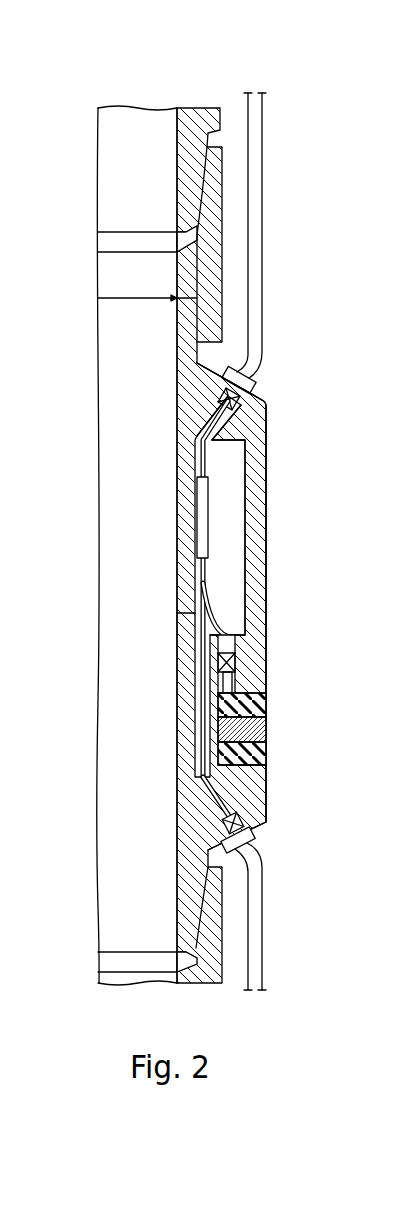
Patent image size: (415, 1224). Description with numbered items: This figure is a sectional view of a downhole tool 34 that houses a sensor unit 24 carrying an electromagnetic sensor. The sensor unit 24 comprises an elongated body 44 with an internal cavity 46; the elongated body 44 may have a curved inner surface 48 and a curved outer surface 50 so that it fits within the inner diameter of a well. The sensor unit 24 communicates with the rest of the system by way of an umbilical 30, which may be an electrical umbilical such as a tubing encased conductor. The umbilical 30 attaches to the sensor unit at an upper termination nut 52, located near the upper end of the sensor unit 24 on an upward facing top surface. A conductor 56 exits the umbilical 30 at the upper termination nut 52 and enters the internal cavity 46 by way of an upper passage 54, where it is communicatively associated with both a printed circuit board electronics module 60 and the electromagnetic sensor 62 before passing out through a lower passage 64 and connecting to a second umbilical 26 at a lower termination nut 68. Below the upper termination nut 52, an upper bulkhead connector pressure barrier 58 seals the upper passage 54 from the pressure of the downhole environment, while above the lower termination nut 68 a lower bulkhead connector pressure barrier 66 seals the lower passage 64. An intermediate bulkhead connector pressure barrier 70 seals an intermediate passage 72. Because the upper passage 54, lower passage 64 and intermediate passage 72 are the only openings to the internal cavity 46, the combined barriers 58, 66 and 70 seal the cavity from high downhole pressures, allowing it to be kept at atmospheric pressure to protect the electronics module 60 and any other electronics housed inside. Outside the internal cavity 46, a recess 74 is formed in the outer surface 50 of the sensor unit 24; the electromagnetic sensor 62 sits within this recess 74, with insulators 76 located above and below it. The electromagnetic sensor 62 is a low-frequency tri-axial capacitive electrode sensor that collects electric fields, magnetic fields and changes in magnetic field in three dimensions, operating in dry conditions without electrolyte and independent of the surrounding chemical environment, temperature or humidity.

The sensor unit 24 is at (293, 585).
The umbilical 26 is at (265, 942).
The umbilical 30 is at (265, 232).
The downhole tool 34 is at (113, 78).
The elongated body 44 is at (267, 512).
The internal cavity 46 is at (238, 575).
The curved inner surface 48 is at (177, 562).
The curved outer surface 50 is at (267, 605).
The upper termination nut 52 is at (262, 378).
The upper passage 54 is at (200, 406).
The conductor 56 is at (205, 440).
The upper bulkhead connector pressure barrier 58 is at (222, 383).
The printed circuit board electronics module 60 is at (199, 505).
The electromagnetic sensor 62 is at (267, 728).
The lower passage 64 is at (197, 800).
The lower bulkhead connector pressure barrier 66 is at (265, 801).
The lower termination nut 68 is at (260, 842).
The intermediate bulkhead connector pressure barrier 70 is at (237, 663).
The intermediate passage 72 is at (195, 614).
The recess 74 is at (267, 757).
The insulators 76 is at (267, 703).